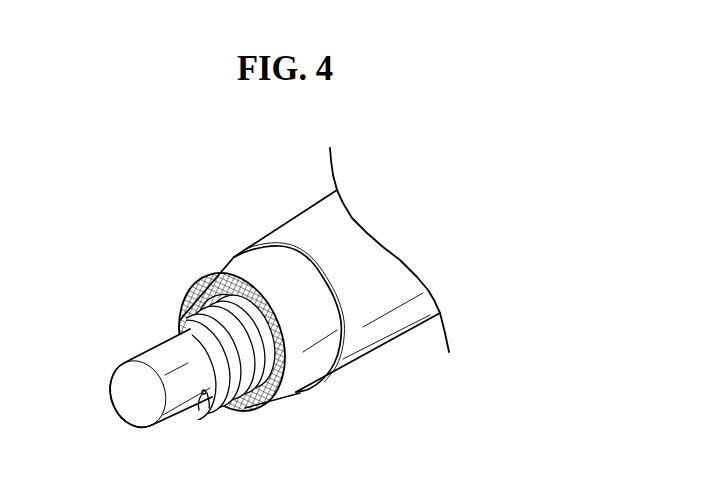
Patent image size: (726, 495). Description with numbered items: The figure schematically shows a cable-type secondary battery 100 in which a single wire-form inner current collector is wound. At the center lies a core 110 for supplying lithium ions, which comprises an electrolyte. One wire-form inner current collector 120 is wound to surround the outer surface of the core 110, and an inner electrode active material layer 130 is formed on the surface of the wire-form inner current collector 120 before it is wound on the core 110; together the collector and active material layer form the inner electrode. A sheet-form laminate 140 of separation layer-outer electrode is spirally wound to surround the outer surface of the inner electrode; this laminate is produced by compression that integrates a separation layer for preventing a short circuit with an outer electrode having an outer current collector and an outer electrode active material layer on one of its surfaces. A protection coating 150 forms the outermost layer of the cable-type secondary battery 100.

The cable-type secondary battery 100 is at (274, 297).
The core for supplying lithium ions 110 is at (145, 354).
The wire-form inner current collector 120 is at (213, 400).
The inner electrode active material layer 130 is at (202, 411).
The laminate of separation layer-outer electrode 140 is at (228, 264).
The protection coating 150 is at (287, 221).